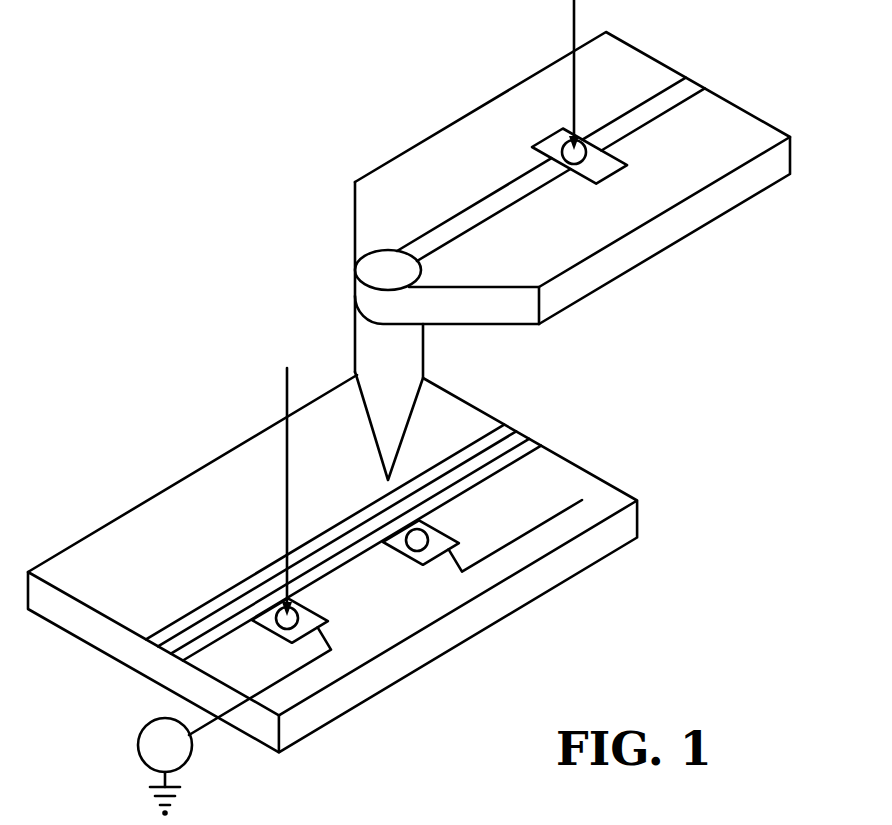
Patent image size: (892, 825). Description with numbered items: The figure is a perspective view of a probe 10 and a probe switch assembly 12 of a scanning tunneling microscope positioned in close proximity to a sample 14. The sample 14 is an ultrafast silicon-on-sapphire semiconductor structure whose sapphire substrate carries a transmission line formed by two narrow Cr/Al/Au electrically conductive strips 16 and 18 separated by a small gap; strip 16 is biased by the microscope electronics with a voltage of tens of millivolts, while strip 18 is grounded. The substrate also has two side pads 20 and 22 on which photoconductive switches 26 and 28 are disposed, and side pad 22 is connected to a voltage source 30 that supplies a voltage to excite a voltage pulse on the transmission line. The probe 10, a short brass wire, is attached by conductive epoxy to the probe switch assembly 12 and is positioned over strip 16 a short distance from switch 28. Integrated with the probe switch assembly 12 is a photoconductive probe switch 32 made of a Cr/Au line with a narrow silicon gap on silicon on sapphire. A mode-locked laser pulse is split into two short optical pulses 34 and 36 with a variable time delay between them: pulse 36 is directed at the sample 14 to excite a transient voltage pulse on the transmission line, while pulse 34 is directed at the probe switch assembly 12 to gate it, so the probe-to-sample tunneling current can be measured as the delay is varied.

The probe 10 is at (397, 449).
The probe switch assembly 12 is at (745, 66).
The sample 14 is at (586, 598).
The electrically conductive strip 16 is at (183, 622).
The electrically conductive strip 18 is at (227, 628).
The side pad 20 is at (582, 500).
The side pad 22 is at (290, 676).
The photoconductive switch 26 is at (315, 612).
The photoconductive switch 28 is at (427, 541).
The voltage source 30 is at (139, 748).
The probe switch 32 is at (581, 178).
The short optical pulse 34 is at (574, 33).
The short optical pulse 36 is at (287, 405).